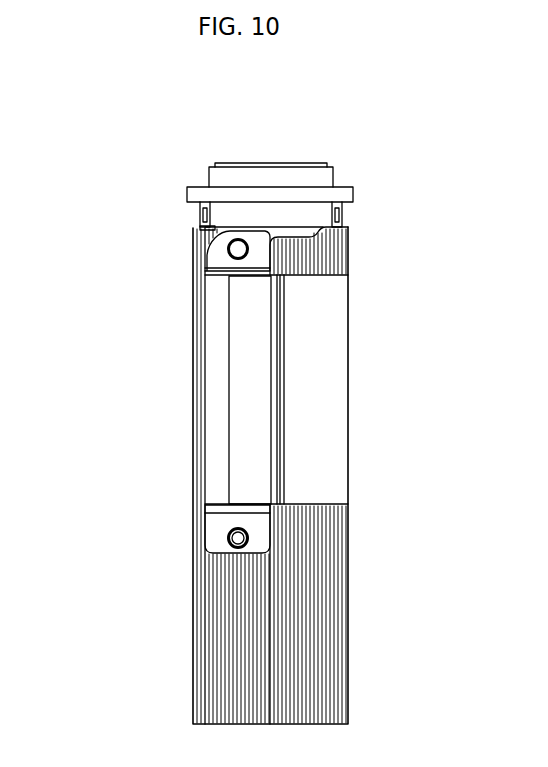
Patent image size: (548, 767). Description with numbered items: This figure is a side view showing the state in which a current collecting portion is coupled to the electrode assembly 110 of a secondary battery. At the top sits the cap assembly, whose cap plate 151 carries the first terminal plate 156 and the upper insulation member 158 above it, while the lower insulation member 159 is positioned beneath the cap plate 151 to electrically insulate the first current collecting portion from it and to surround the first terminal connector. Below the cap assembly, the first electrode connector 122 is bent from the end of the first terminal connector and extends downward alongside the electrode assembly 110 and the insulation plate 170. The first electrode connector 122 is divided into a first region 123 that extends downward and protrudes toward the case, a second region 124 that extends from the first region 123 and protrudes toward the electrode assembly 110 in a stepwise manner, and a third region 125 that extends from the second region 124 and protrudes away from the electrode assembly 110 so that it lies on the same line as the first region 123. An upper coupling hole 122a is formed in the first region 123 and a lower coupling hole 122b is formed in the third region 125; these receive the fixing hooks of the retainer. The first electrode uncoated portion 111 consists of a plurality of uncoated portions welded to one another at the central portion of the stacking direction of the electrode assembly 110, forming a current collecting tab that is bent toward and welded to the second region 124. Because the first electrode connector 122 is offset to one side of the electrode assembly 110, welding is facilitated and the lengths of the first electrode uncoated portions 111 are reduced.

The electrode assembly 110 is at (352, 588).
The first electrode uncoated portion 111 is at (258, 367).
The first electrode connector 122 is at (108, 313).
The upper coupling hole 122a is at (197, 228).
The lower coupling hole 122b is at (242, 545).
The first region 123 is at (210, 252).
The second region 124 is at (215, 407).
The third region 125 is at (212, 532).
The cap plate 151 is at (347, 193).
The first terminal plate 156 is at (244, 165).
The upper insulation member 158 is at (300, 176).
The lower insulation member 159 is at (208, 222).
The insulation plate 170 is at (340, 231).